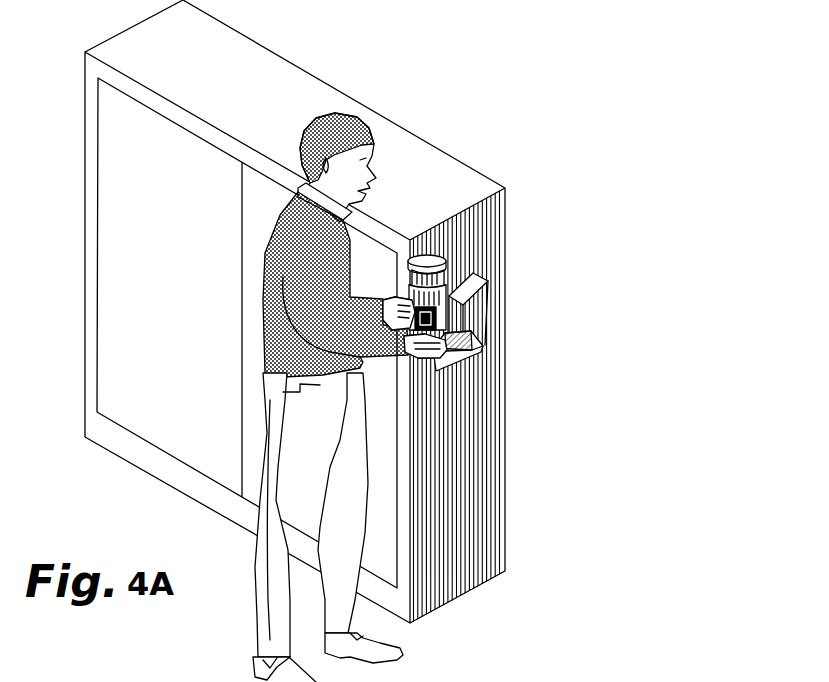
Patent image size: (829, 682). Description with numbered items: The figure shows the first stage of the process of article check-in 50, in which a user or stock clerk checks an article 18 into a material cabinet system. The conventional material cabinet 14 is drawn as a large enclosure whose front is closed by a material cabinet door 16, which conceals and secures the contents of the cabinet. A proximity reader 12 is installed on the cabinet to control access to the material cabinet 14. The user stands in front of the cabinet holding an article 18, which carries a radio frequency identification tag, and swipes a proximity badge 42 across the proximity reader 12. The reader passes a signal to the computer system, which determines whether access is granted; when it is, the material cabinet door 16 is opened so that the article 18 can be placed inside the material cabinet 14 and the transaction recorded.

The proximity reader 12 is at (477, 312).
The material cabinet 14 is at (270, 311).
The material cabinet door 16 is at (125, 133).
The article 18 is at (430, 297).
The proximity badge 42 is at (464, 352).
The process of article check-in 50 is at (368, 341).